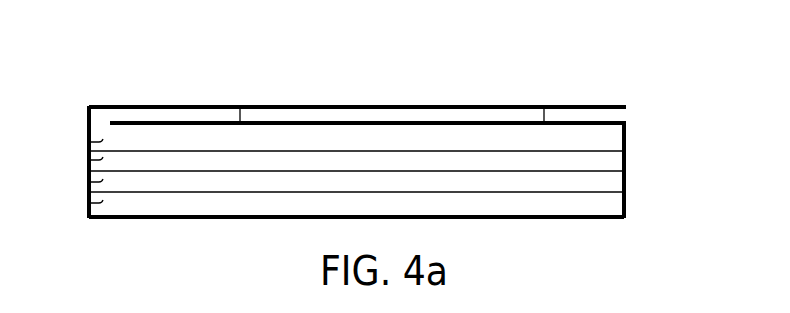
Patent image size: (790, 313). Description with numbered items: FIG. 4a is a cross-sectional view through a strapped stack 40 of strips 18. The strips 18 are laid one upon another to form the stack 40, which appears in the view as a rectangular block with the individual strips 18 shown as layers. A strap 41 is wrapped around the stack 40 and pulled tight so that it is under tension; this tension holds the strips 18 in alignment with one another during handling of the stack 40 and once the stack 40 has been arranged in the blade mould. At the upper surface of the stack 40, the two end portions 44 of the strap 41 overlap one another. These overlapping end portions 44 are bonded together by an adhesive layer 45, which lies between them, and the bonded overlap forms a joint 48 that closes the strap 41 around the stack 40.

The stack 40 is at (648, 172).
The strap 41 is at (88, 136).
The end portions 44 is at (152, 118).
The adhesive layer 45 is at (403, 116).
The joint 48 is at (345, 90).
The strips 18 is at (88, 150).